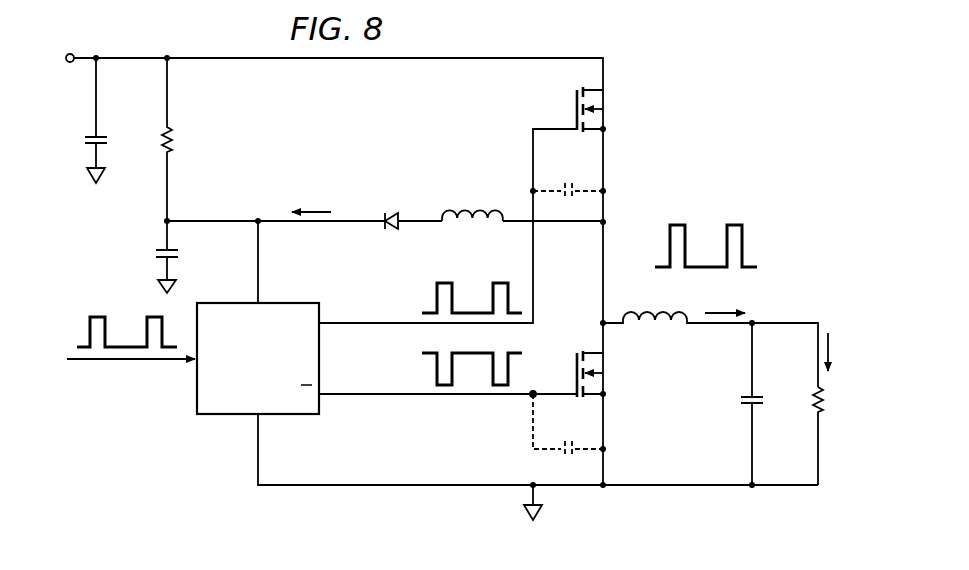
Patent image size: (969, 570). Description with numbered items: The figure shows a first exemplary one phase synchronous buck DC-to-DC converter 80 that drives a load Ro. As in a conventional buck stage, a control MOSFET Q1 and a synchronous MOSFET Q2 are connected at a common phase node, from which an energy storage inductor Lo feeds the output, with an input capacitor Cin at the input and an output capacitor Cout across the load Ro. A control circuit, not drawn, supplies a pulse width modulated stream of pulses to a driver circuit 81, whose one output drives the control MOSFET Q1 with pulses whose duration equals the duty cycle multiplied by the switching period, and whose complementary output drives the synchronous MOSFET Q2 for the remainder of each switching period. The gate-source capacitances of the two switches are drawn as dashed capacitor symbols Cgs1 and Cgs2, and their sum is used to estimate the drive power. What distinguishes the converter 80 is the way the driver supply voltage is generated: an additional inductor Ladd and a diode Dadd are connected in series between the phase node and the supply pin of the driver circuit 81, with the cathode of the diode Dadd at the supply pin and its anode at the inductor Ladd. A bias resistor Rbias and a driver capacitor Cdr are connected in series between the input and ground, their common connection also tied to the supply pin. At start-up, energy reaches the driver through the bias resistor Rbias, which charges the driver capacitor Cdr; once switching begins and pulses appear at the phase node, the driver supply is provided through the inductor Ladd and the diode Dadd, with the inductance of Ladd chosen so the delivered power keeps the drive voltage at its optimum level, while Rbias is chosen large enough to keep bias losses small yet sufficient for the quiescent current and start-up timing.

The synchronous buck converter 80 is at (712, 140).
The driver circuit 81 is at (229, 416).
The control MOSFET Q1 is at (604, 109).
The synchronous MOSFET Q2 is at (604, 374).
The input capacitor Cin is at (106, 120).
The bias resistor Rbias is at (189, 139).
The driver capacitor Cdr is at (149, 257).
The diode Dadd is at (386, 209).
The additional inductor Ladd is at (503, 200).
The gate-source capacitance of control MOSFET Cgs1 is at (568, 177).
The gate-source capacitance of synchronous MOSFET Cgs2 is at (568, 425).
The energy storage inductor Lo is at (687, 300).
The output capacitor Cout is at (730, 404).
The load Ro is at (830, 436).